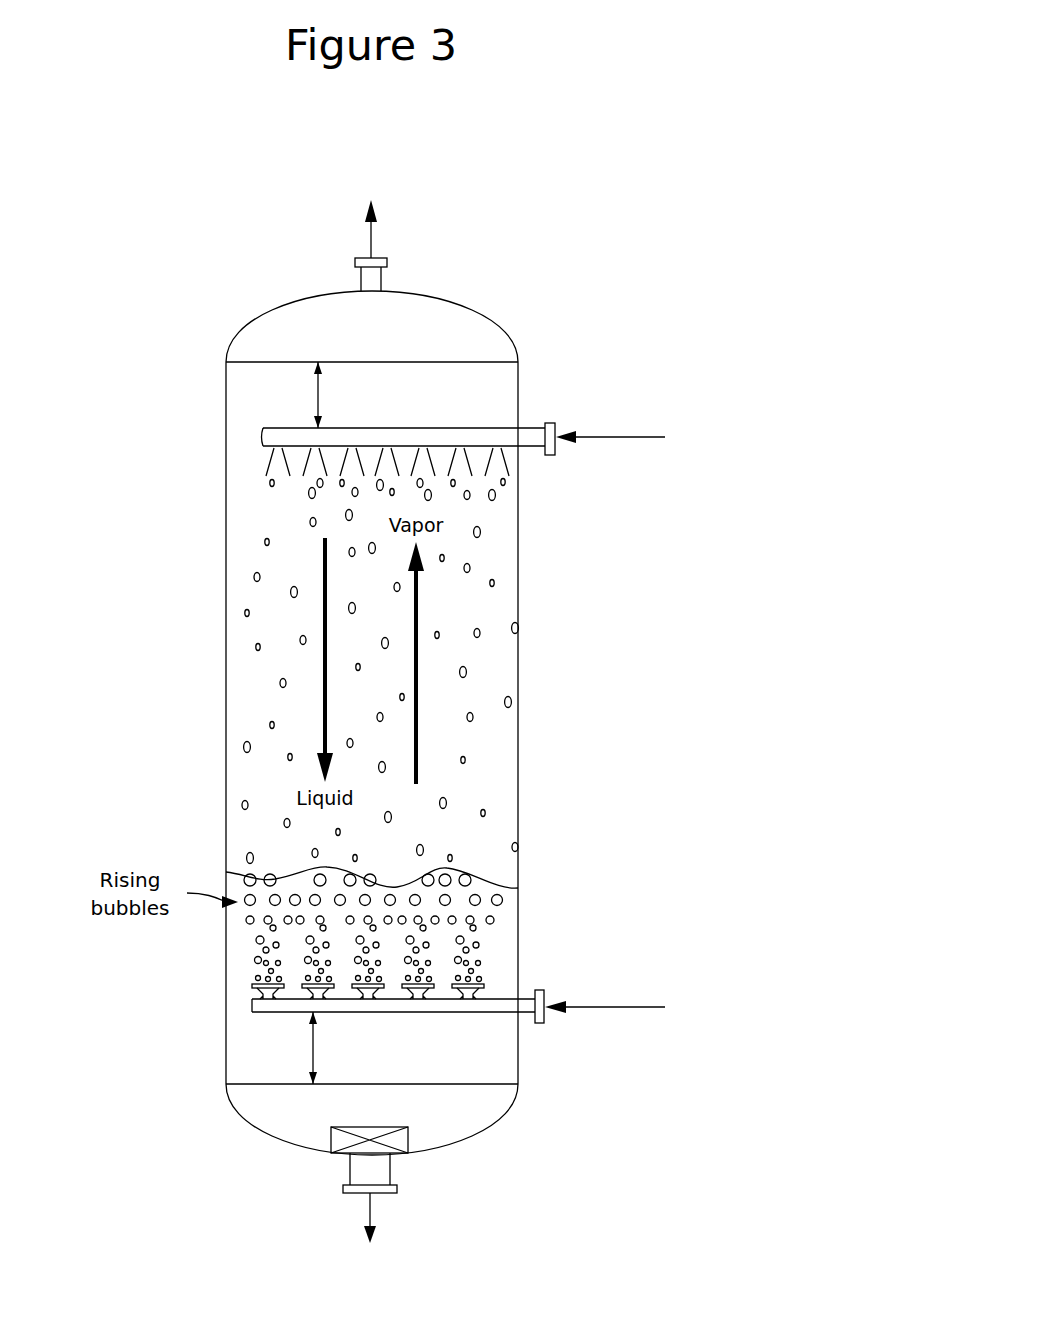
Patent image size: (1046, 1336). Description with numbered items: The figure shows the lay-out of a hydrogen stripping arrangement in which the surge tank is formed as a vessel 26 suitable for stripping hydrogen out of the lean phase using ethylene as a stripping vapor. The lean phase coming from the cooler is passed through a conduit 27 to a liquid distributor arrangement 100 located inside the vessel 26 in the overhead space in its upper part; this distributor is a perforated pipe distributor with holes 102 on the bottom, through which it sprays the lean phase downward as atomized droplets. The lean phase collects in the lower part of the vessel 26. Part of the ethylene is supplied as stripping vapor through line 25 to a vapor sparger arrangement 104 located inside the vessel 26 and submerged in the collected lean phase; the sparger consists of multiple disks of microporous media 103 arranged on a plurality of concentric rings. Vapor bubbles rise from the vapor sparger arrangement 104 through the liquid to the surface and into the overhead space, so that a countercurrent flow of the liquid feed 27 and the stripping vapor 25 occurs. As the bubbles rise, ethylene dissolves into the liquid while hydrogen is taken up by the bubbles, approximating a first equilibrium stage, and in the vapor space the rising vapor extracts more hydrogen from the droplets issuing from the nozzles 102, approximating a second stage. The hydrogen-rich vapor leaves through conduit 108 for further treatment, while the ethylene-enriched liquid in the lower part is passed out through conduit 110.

The vessel 26 is at (222, 613).
The conduit 108 is at (382, 278).
The liquid distributor arrangement 100 is at (405, 427).
The holes 102 is at (272, 446).
The conduit 27 is at (592, 440).
The line 25 is at (582, 1005).
The disks of microporous media 103 is at (257, 988).
The vapor sparger arrangement 104 is at (270, 1013).
The conduit 110 is at (390, 1168).